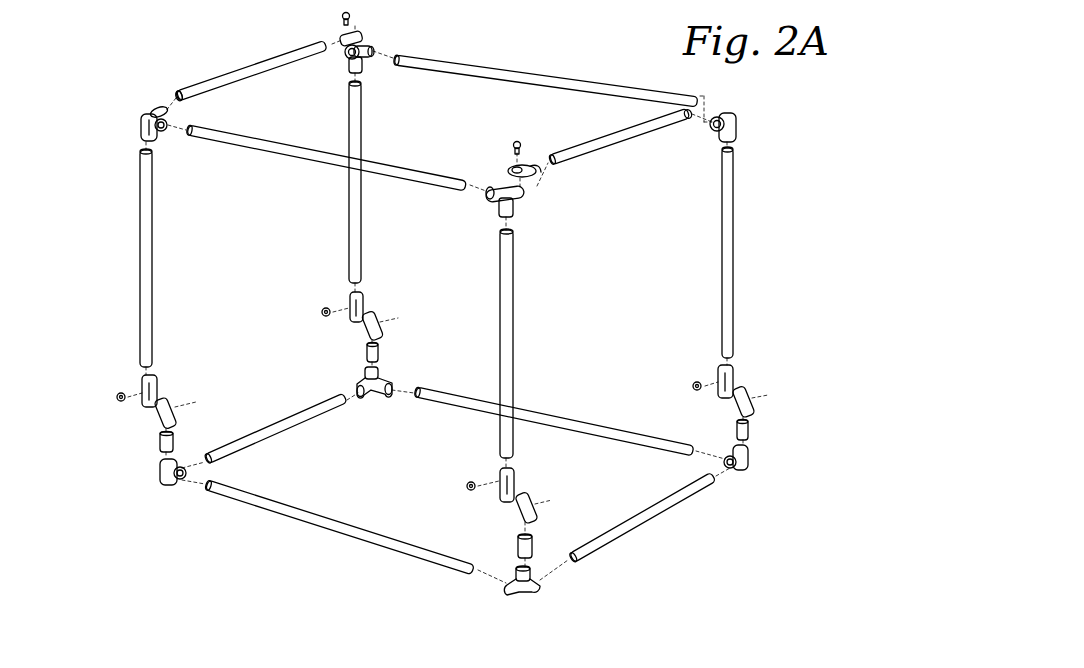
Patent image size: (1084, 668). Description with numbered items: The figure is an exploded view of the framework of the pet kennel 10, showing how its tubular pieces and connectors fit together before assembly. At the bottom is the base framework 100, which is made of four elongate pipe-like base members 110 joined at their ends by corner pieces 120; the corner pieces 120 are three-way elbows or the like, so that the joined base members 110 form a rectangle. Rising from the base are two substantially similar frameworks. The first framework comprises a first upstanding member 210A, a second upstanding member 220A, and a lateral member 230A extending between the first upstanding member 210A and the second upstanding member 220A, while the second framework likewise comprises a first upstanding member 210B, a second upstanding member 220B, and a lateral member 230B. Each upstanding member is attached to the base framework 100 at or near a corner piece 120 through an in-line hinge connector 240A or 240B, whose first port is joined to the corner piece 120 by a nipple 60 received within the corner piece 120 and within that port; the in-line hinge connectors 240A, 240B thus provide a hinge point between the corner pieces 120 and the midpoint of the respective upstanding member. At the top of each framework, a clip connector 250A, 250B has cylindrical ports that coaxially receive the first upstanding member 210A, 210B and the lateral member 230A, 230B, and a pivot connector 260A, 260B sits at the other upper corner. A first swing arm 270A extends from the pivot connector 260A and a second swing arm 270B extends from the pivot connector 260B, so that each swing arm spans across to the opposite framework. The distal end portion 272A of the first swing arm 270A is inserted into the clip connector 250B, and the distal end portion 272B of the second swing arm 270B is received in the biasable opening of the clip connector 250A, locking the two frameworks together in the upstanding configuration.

The pet kennel 10 is at (88, 72).
The base framework 100 is at (213, 513).
The base member 110 is at (262, 430).
The corner piece 120 is at (745, 465).
The nipple 60 is at (358, 352).
The first upstanding member 210A is at (148, 283).
The first upstanding member 210B is at (727, 265).
The second upstanding member 220A is at (510, 340).
The second upstanding member 220B is at (358, 135).
The lateral member 230A is at (307, 155).
The lateral member 230B is at (487, 75).
The in-line hinge connector 240A is at (143, 412).
The in-line hinge connector 240B is at (378, 305).
The clip connector 250A is at (127, 125).
The clip connector 250B is at (736, 112).
The pivot connector 260A is at (532, 189).
The pivot connector 260B is at (360, 37).
The first swing arm 270A is at (597, 145).
The second swing arm 270B is at (266, 62).
The distal end portion 272A is at (695, 95).
The distal end portion 272B is at (189, 92).